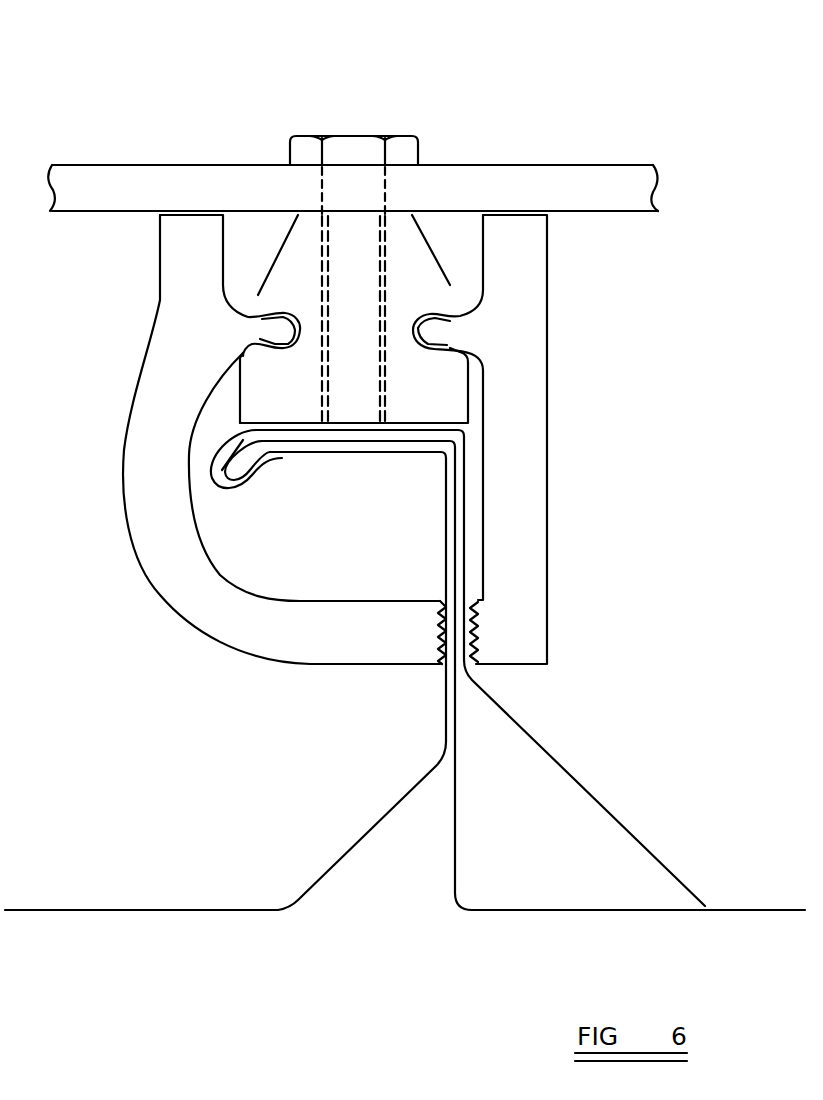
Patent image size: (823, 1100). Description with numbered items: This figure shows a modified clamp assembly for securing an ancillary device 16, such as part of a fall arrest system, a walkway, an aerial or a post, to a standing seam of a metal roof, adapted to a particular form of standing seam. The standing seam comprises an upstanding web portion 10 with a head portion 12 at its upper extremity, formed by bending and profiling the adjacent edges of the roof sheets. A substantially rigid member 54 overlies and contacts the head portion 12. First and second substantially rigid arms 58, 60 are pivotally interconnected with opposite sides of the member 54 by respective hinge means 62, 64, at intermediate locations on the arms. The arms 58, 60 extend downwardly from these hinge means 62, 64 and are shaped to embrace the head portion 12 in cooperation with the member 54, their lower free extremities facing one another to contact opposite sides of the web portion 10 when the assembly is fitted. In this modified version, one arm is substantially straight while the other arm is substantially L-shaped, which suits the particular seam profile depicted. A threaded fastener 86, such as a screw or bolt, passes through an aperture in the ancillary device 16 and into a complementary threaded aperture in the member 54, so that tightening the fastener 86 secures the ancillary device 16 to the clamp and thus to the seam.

The web portion 10 is at (467, 542).
The head portion 12 is at (323, 452).
The ancillary device 16 is at (518, 166).
The substantially rigid member 54 is at (431, 247).
The first arm 58 is at (124, 433).
The second arm 60 is at (547, 413).
The hinge means 62 is at (269, 299).
The hinge means 64 is at (432, 299).
The threaded fastener 86 is at (338, 136).